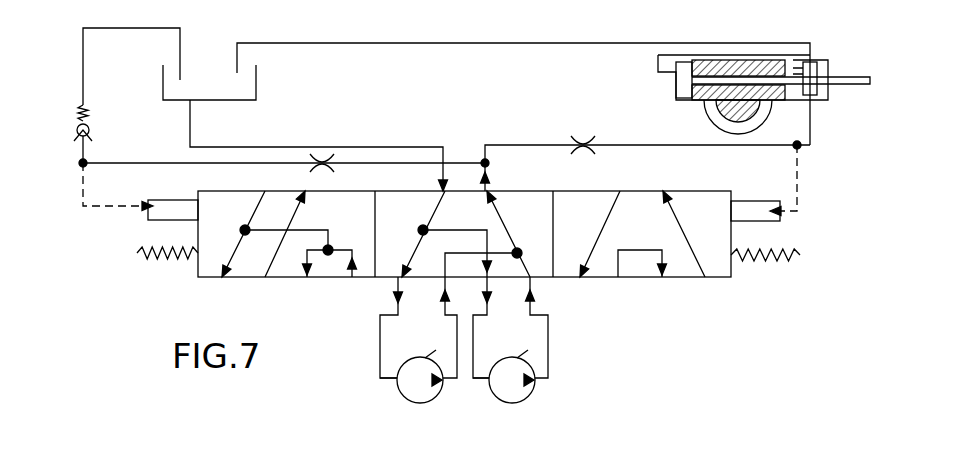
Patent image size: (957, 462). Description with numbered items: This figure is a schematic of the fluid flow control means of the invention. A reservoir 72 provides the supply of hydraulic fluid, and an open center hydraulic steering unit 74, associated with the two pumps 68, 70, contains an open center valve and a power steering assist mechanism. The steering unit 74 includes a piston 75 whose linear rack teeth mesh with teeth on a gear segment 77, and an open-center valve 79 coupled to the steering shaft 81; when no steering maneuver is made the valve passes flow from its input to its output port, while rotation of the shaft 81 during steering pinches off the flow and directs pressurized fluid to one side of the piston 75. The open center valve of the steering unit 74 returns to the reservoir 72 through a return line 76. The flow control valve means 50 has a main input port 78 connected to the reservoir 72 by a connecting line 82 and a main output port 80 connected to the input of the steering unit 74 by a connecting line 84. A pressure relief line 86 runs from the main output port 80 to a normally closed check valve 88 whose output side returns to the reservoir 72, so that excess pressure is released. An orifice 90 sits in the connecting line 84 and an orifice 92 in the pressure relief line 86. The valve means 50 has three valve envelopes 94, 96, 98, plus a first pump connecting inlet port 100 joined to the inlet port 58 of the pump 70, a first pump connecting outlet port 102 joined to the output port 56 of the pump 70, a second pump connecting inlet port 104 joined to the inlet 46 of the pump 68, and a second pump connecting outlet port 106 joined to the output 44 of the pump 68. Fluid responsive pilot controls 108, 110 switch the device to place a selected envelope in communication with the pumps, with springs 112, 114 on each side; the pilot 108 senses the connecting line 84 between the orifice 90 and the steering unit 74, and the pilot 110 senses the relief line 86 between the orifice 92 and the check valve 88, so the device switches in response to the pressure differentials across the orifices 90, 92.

The output of pump 44 is at (535, 384).
The inlet of pump 46 is at (490, 374).
The flow control valve means 50 is at (648, 293).
The output port of pump 56 is at (446, 384).
The inlet port of pump 58 is at (395, 382).
The pump 68 is at (516, 356).
The pump 70 is at (426, 356).
The reservoir 72 is at (257, 76).
The open center hydraulic steering unit 74 is at (815, 60).
The piston 75 is at (730, 60).
The return line 76 is at (548, 40).
The gear segment 77 is at (760, 112).
The main input port 78 is at (440, 181).
The open-center valve 79 is at (830, 66).
The main output port 80 is at (490, 178).
The steering shaft 81 is at (852, 85).
The connecting line 82 is at (316, 146).
The connecting line 84 is at (656, 143).
The pressure relief line 86 is at (180, 165).
The check valve 88 is at (76, 126).
The orifice 90 is at (583, 138).
The orifice 92 is at (318, 169).
The valve envelope 94 is at (528, 190).
The valve envelope 96 is at (707, 190).
The valve envelope 98 is at (263, 278).
The first pump connecting inlet port 100 is at (396, 284).
The first pump connecting outlet port 102 is at (441, 284).
The second pump connecting inlet port 104 is at (483, 284).
The second pump connecting outlet port 106 is at (535, 284).
The fluid responsive pilot control 108 is at (783, 222).
The fluid responsive pilot control 110 is at (152, 222).
The spring 112 is at (775, 262).
The spring 114 is at (148, 262).